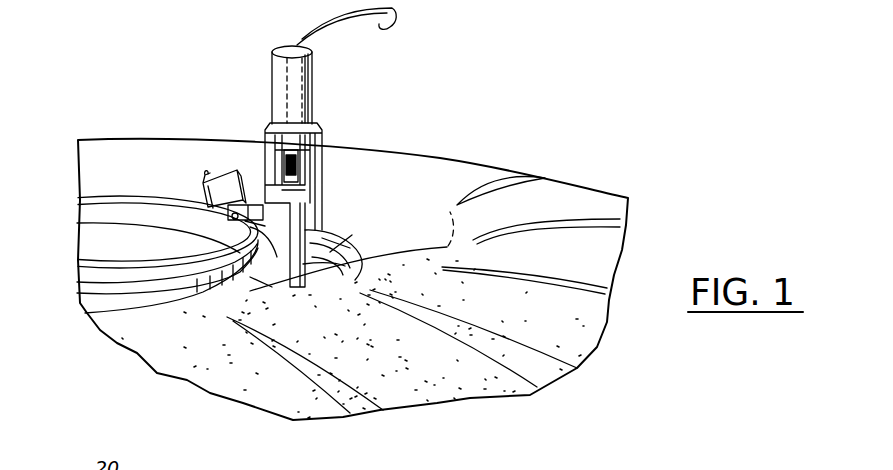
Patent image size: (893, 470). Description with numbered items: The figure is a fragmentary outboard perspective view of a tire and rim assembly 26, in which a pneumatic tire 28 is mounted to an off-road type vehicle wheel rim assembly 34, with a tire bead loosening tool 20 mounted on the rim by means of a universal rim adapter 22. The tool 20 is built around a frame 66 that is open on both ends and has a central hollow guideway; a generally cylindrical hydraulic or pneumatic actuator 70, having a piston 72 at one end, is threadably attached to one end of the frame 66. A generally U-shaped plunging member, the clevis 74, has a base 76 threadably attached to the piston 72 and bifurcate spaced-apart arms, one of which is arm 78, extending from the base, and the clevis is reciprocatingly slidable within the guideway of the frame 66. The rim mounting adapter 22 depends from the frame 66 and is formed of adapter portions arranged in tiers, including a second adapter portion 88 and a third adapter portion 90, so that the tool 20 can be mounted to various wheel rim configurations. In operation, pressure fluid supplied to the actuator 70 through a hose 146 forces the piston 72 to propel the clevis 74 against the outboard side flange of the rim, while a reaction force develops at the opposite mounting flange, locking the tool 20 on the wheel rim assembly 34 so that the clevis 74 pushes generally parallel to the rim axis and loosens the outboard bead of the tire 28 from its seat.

The tire bead loosening tool 20 is at (355, 147).
The universal rim adapter 22 is at (207, 166).
The tire and rim assembly 26 is at (150, 126).
The pneumatic tire 28 is at (568, 192).
The wheel rim assembly 34 is at (72, 239).
The frame 66 is at (322, 137).
The actuator 70 is at (312, 64).
The piston 72 is at (305, 170).
The clevis 74 is at (330, 244).
The base 76 is at (300, 192).
The arm 78 is at (310, 268).
The second adapter portion 88 is at (222, 226).
The third adapter portion 90 is at (200, 187).
The hose 146 is at (392, 32).